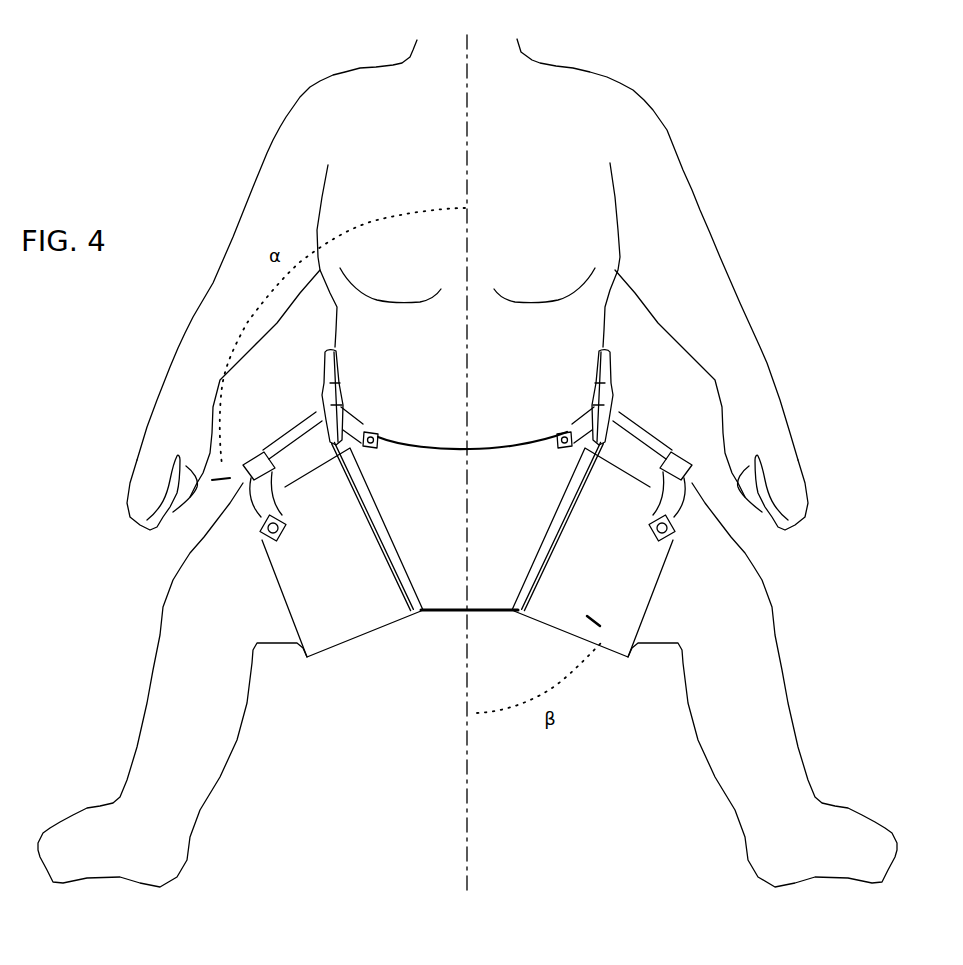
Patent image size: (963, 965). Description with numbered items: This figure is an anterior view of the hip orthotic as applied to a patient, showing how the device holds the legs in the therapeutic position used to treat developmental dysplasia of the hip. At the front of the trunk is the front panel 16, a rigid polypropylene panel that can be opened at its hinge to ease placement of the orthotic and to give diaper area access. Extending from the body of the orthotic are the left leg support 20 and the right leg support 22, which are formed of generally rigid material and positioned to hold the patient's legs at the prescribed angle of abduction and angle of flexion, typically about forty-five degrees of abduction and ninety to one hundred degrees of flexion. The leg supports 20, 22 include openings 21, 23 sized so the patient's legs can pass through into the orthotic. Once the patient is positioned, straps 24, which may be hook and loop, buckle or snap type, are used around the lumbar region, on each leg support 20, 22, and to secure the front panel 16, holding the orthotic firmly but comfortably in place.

The front panel 16 is at (432, 613).
The left leg support 20 is at (567, 580).
The opening 21 is at (622, 424).
The right leg support 22 is at (353, 590).
The opening 23 is at (297, 422).
The straps 24 is at (620, 400).